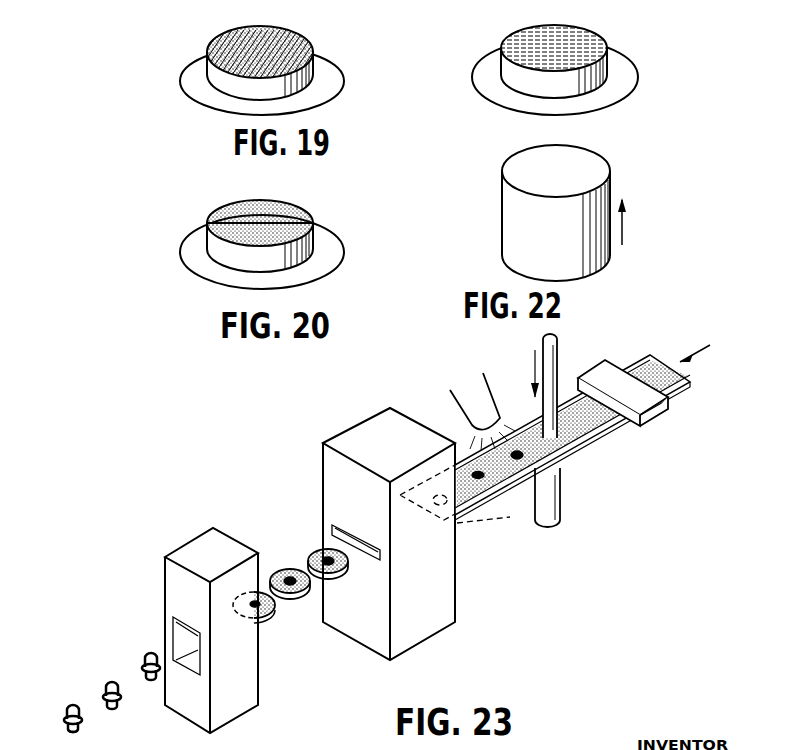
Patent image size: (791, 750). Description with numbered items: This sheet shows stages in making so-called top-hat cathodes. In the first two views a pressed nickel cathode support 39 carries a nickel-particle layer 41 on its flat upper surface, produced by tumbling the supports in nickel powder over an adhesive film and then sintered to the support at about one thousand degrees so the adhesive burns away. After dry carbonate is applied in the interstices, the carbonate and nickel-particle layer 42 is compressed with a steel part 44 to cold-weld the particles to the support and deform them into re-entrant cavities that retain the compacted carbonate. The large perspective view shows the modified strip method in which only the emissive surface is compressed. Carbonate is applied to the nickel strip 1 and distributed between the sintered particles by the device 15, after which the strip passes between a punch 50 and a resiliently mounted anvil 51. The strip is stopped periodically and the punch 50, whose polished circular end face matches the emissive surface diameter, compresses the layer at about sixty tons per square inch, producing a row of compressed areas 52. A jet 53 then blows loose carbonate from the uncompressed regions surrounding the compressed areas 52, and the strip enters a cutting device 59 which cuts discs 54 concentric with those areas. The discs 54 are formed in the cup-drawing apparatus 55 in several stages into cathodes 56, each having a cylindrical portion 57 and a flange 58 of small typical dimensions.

In FIG. 23, the nickel strip 1 is at (635, 363).
In FIG. 23, the device 15 is at (645, 397).
In FIG. 19, the cathode support 39 is at (207, 68).
In FIG. 20, the cathode support 39 is at (208, 246).
In FIG. 22, the cathode support 39 is at (505, 70).
In FIG. 19, the nickel-particle layer 41 is at (218, 40).
In FIG. 20, the nickel-particle layer 41 is at (225, 213).
In FIG. 22, the carbonate and nickel-particle layer 42 is at (513, 36).
In FIG. 22, the steel part 44 is at (522, 252).
In FIG. 23, the punch 50 is at (560, 347).
In FIG. 23, the anvil 51 is at (547, 497).
In FIG. 23, the compressed areas 52 is at (517, 460).
In FIG. 23, the jet 53 is at (452, 405).
In FIG. 23, the discs 54 is at (322, 583).
In FIG. 23, the cup-drawing apparatus 55 is at (242, 682).
In FIG. 23, the cathodes 56 is at (118, 705).
In FIG. 23, the cylindrical portion 57 is at (71, 727).
In FIG. 23, the flange 58 is at (80, 731).
In FIG. 23, the cutting device 59 is at (440, 590).